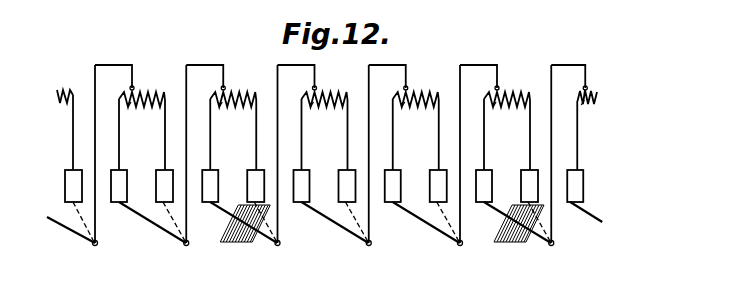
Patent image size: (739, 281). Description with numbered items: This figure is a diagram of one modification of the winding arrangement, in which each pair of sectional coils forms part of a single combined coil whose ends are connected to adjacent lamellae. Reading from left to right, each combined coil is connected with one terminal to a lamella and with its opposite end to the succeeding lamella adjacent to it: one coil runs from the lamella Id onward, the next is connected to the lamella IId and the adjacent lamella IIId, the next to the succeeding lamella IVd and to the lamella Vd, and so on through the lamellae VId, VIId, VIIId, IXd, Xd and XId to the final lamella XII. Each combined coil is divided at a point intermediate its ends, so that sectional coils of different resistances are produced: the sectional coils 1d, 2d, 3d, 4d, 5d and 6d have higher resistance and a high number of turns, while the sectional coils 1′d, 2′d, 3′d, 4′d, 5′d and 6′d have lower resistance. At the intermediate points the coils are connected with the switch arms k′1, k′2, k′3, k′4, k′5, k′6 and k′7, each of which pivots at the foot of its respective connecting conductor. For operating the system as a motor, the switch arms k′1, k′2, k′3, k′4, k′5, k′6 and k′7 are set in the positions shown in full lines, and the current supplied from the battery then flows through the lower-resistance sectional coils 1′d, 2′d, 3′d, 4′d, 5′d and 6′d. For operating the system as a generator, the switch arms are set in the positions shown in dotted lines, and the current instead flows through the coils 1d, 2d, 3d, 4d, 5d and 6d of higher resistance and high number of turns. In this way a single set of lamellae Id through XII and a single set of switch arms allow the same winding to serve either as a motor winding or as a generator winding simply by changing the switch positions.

The sectional coil 6d is at (332, 87).
The lamella Id is at (72, 185).
The switch arm k′1 is at (82, 223).
The sectional coil 1d is at (142, 89).
The sectional coil 1′d is at (132, 117).
The lamella IId is at (125, 178).
The lamella IIId is at (152, 186).
The switch arm k′2 is at (152, 223).
The sectional coil 2d is at (233, 89).
The sectional coil 2′d is at (223, 117).
The lamella IVd is at (218, 178).
The lamella Vd is at (243, 186).
The switch arm k′3 is at (243, 232).
The sectional coil 3d is at (325, 89).
The sectional coil 3′d is at (315, 117).
The lamella VId is at (310, 178).
The lamella VIId is at (335, 186).
The switch arm k′4 is at (335, 223).
The sectional coil 4d is at (416, 89).
The sectional coil 4′d is at (406, 117).
The lamella VIIId is at (405, 178).
The lamella IXd is at (426, 186).
The switch arm k′5 is at (426, 223).
The sectional coil 5d is at (507, 89).
The sectional coil 5′d is at (497, 117).
The lamella Xd is at (490, 178).
The lamella XId is at (516, 186).
The switch arm k′6 is at (517, 232).
The sectional coil 6′d is at (590, 116).
The lamella XII is at (584, 184).
The switch arm k′7 is at (587, 224).